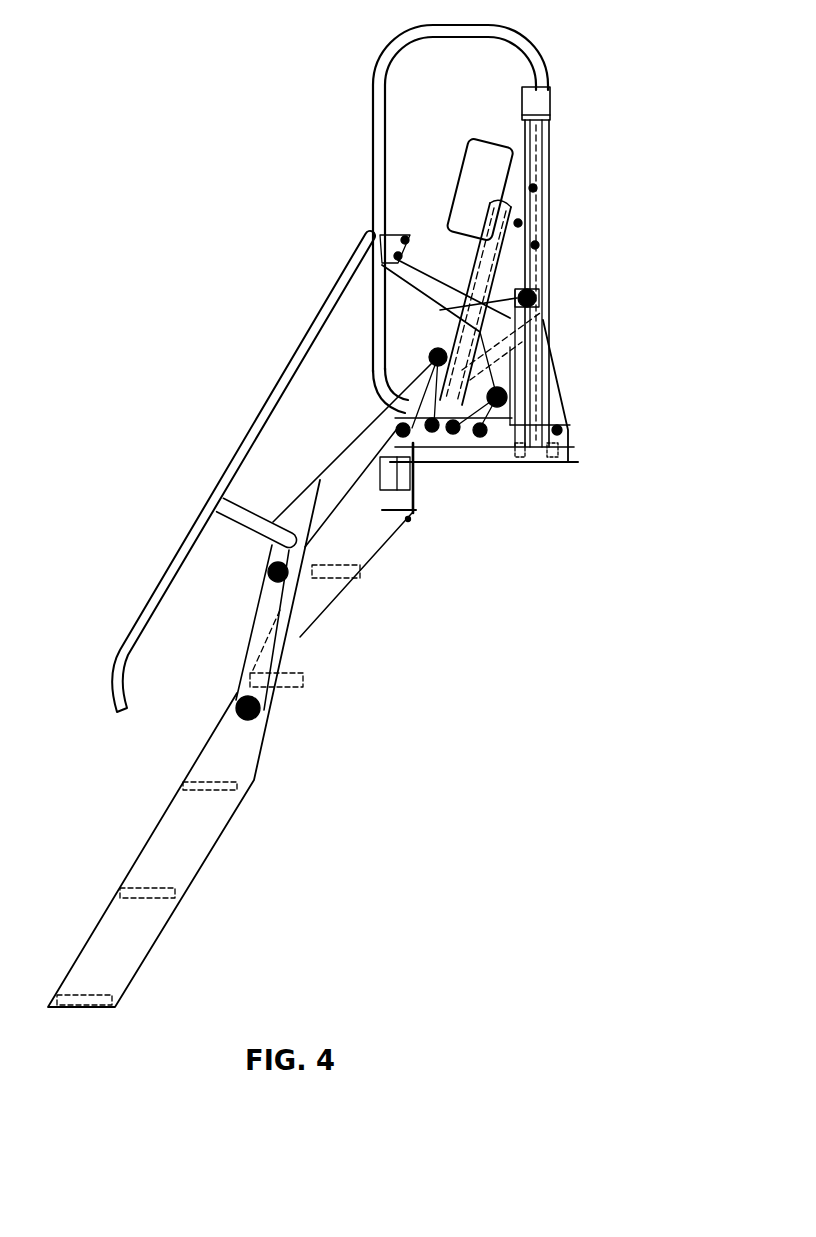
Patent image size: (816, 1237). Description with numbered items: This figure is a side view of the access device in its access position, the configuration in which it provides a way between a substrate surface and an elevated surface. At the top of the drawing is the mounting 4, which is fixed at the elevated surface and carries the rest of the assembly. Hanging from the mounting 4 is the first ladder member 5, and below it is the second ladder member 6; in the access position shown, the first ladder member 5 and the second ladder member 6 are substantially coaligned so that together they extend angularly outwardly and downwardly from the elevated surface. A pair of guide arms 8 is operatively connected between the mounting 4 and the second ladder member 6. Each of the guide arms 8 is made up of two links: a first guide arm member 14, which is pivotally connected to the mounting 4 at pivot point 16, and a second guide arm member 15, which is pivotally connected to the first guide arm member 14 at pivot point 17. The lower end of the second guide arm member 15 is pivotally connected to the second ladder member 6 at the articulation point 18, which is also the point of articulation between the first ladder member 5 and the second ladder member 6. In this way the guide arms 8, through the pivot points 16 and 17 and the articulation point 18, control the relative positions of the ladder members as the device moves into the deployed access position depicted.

The mounting 4 is at (570, 457).
The first ladder member 5 is at (400, 511).
The second ladder member 6 is at (187, 845).
The guide arms 8 is at (262, 458).
The first guide arm member 14 is at (330, 485).
The second guide arm member 15 is at (262, 613).
The pivot point 16 is at (536, 295).
The pivot point 17 is at (268, 573).
The articulation point 18 is at (262, 713).